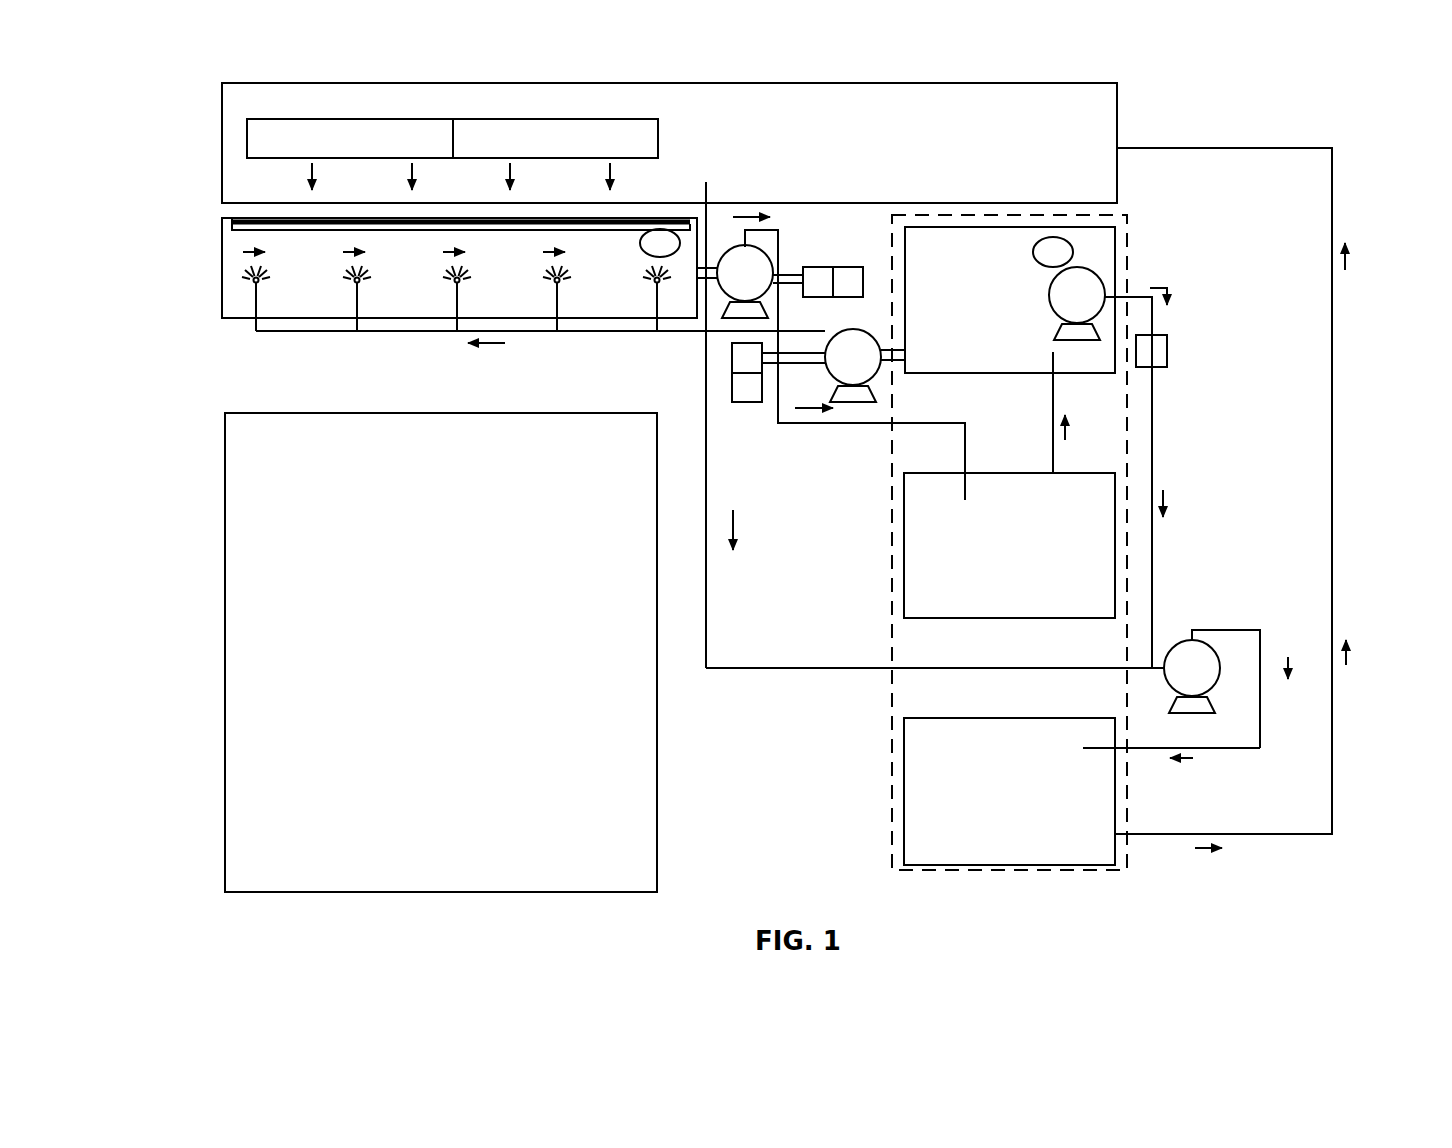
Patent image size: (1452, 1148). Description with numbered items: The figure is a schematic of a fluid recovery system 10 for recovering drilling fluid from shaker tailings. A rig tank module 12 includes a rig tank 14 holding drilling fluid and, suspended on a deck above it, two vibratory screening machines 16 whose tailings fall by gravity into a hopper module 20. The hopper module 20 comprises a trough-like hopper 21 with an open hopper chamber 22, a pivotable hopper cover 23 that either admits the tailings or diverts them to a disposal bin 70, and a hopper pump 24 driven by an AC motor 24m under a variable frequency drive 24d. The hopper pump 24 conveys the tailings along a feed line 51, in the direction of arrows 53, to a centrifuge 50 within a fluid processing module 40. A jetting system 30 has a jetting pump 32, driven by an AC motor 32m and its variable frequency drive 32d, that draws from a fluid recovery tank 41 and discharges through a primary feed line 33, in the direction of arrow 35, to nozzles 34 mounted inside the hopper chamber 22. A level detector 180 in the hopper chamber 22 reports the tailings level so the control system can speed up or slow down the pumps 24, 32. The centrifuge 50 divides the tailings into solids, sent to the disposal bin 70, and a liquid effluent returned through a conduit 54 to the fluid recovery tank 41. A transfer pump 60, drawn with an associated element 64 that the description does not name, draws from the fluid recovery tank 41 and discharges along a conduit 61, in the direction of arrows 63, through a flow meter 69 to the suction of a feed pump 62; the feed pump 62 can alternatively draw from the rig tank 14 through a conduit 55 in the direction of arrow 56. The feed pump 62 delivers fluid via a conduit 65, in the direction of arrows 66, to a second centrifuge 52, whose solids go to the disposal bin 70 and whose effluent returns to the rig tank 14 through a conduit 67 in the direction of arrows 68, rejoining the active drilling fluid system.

The fluid recovery system 10 is at (1222, 78).
The rig tank module 12 is at (222, 140).
The rig tank 14 is at (272, 83).
The vibratory screening machine 16 is at (300, 119).
The hopper module 20 is at (222, 252).
The hopper 21 is at (222, 290).
The hopper chamber 22 is at (404, 253).
The hopper cover 23 is at (232, 228).
The hopper pump 24 is at (752, 270).
The variable frequency drive 24d is at (843, 280).
The AC motor 24m is at (810, 295).
The jetting system 30 is at (222, 330).
The jetting pump 32 is at (860, 365).
The variable frequency drive 32d is at (752, 393).
The AC motor 32m is at (733, 358).
The primary feed line 33 is at (605, 333).
The nozzle 34 is at (258, 307).
The arrow 35 is at (498, 348).
The fluid processing module 40 is at (1140, 215).
The fluid recovery tank 41 is at (1010, 300).
The centrifuge 50 is at (1009, 545).
The feed line 51 is at (778, 230).
The centrifuge 52 is at (1009, 791).
The arrows 53 is at (758, 213).
The conduit 54 is at (1068, 430).
The conduit 55 is at (755, 668).
The arrow 56 is at (710, 524).
The transfer pump 60 is at (1080, 288).
The conduit 61 is at (1153, 460).
The feed pump 62 is at (1200, 668).
The arrows 63 is at (1170, 293).
The pump sensor 64 is at (1040, 262).
The conduit 65 is at (1232, 750).
The arrows 66 is at (1186, 760).
The conduit 67 is at (1332, 505).
The arrows 68 is at (1346, 262).
The flow meter 69 is at (1155, 368).
The disposal bin 70 is at (441, 652).
The level detector 180 is at (641, 246).